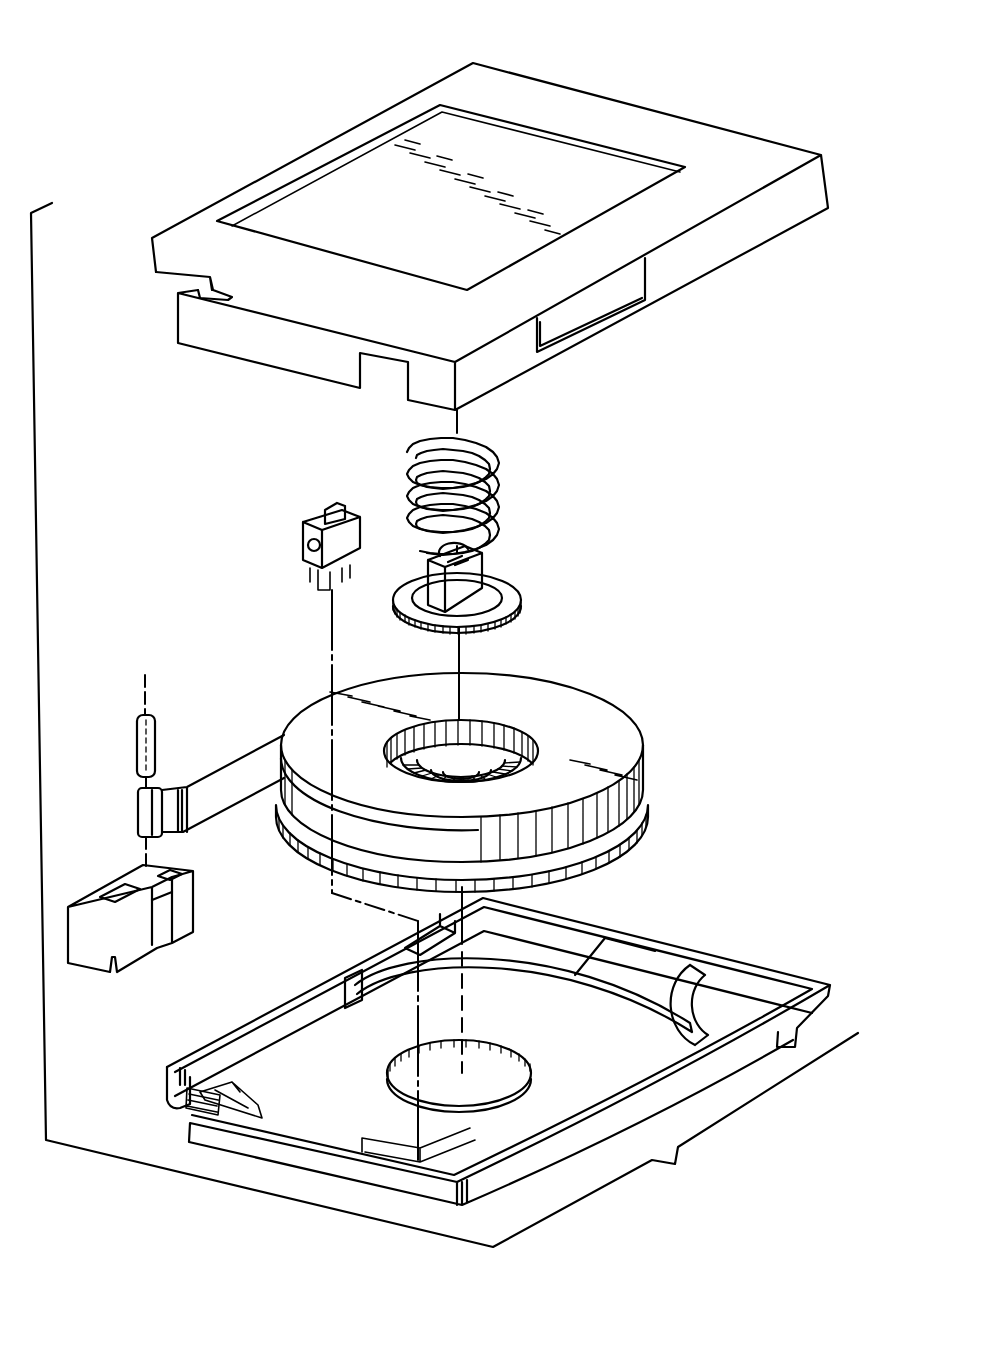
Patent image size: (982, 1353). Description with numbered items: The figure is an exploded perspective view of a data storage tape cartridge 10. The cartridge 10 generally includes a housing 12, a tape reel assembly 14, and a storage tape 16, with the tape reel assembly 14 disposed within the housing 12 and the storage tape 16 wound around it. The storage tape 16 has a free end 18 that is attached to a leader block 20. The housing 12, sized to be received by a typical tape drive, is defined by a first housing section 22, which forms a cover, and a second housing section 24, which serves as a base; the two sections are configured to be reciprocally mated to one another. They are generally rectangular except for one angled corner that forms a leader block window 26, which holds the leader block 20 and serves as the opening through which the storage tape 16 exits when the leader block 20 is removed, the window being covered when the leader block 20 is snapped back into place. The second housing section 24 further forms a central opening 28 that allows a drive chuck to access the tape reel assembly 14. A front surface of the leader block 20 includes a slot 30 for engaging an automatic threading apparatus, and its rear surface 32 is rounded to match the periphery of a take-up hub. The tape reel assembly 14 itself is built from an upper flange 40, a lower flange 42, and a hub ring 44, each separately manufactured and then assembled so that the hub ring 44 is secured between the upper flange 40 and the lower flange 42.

The data storage tape cartridge 10 is at (793, 78).
The housing 12 is at (800, 128).
The tape reel assembly 14 is at (570, 685).
The storage tape 16 is at (235, 770).
The free end 18 is at (140, 810).
The leader block 20 is at (200, 895).
The first housing section 22 is at (612, 103).
The second housing section 24 is at (745, 950).
The leader block window 26 is at (157, 274).
The central opening 28 is at (498, 1052).
The slot 30 is at (163, 916).
The rear surface 32 is at (172, 870).
The upper flange 40 is at (620, 724).
The lower flange 42 is at (625, 821).
The hub ring 44 is at (490, 745).